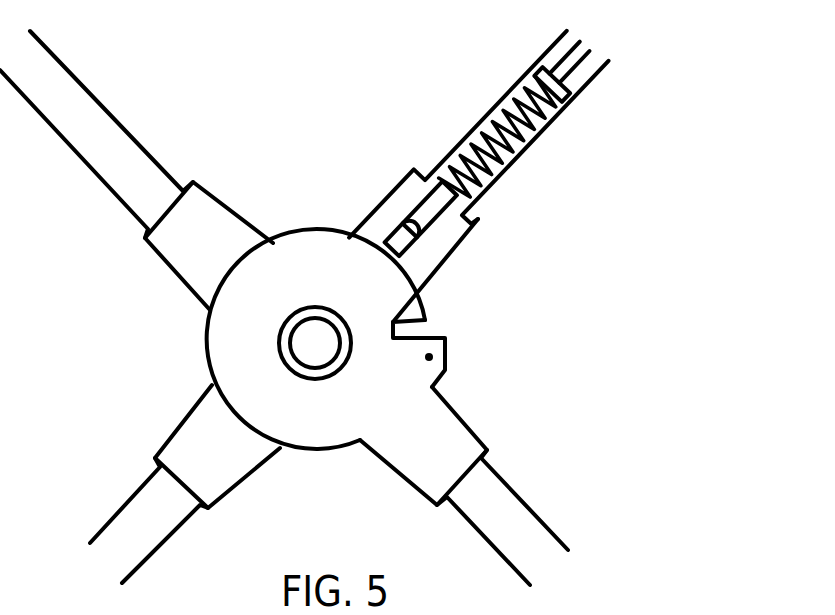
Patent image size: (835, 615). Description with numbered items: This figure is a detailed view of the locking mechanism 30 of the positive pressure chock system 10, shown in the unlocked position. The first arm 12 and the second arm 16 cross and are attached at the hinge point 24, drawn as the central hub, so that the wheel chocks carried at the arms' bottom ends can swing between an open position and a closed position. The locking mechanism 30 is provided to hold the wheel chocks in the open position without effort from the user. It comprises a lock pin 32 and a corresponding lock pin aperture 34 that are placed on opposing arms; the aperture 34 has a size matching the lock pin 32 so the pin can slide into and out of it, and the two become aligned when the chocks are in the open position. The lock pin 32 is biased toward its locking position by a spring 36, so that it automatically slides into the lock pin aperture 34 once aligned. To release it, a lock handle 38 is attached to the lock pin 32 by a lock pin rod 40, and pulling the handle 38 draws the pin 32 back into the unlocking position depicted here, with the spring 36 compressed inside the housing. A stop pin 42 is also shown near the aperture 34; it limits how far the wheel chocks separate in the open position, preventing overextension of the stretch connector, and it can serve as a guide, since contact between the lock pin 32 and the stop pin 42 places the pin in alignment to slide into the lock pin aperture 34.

The positive pressure chock system 10 is at (710, 101).
The first arm 12 is at (123, 505).
The second arm 16 is at (503, 480).
The hinge point 24 is at (323, 331).
The locking mechanism 30 is at (424, 162).
The lock pin 32 is at (398, 243).
The lock pin aperture 34 is at (398, 323).
The spring 36 is at (456, 172).
The lock handle 38 is at (587, 92).
The lock pin rod 40 is at (493, 133).
The stop pin 42 is at (429, 357).